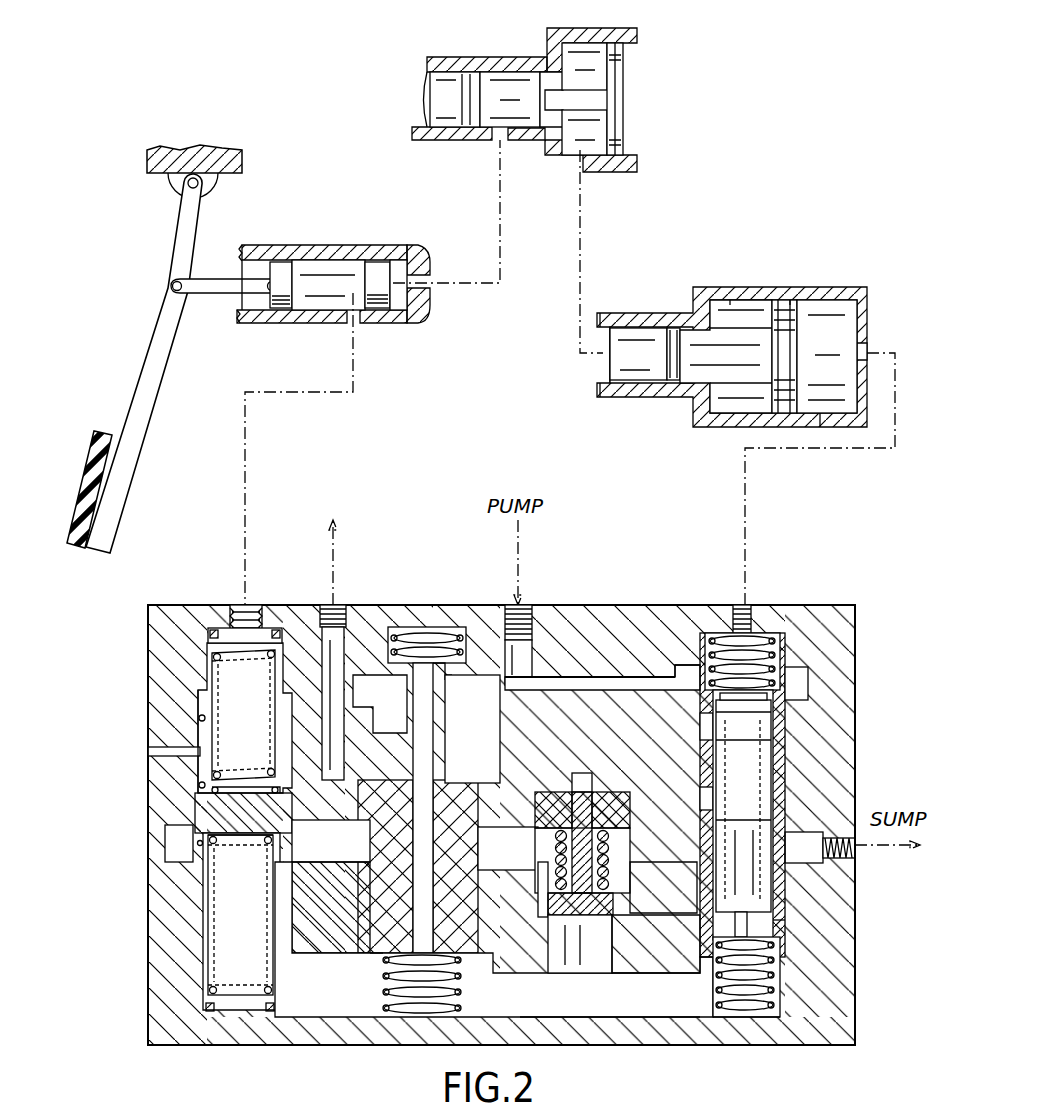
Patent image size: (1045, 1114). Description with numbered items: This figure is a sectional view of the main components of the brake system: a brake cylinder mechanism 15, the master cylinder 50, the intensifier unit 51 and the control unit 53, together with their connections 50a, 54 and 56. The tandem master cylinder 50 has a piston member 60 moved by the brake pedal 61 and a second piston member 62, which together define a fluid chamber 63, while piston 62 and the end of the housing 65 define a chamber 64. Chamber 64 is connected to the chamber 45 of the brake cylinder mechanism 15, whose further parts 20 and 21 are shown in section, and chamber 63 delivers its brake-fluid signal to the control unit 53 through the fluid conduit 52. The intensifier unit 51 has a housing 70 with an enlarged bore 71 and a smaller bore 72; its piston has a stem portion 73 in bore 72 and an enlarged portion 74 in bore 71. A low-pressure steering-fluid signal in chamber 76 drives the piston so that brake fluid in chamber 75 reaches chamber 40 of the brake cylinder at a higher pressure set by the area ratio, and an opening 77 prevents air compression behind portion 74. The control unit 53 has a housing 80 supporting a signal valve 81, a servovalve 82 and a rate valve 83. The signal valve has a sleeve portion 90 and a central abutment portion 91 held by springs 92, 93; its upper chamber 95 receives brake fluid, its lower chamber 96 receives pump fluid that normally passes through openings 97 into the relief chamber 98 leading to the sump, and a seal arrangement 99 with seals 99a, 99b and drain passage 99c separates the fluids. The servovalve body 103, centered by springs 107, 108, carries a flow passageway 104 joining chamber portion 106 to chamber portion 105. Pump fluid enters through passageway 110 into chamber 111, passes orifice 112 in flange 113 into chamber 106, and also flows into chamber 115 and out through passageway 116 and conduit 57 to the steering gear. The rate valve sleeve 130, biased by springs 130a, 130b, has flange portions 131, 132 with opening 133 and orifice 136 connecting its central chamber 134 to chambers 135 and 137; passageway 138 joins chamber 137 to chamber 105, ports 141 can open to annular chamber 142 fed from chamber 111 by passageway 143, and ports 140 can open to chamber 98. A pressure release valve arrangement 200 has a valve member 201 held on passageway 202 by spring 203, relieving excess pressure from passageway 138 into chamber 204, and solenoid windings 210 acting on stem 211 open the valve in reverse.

The brake cylinder mechanism 15 is at (660, 47).
The piston 20 is at (438, 90).
The seal 21 is at (615, 95).
The chamber 40 is at (580, 52).
The chamber 45 is at (515, 75).
The master cylinder 50 is at (278, 258).
The pilot line 50a is at (500, 205).
The intensifier unit 51 is at (805, 300).
The fluid conduit 52 is at (245, 522).
The control unit 53 is at (823, 617).
The pilot line 54 is at (745, 495).
The pump inlet line 56 is at (518, 545).
The fluid conduit 57 is at (333, 572).
The piston member 60 is at (283, 262).
The brake pedal 61 is at (106, 436).
The second piston member 62 is at (380, 258).
The fluid chamber 63 is at (335, 265).
The chamber 64 is at (400, 325).
The housing 65 is at (430, 253).
The housing 70 is at (860, 300).
The enlarged bore 71 is at (825, 412).
The smaller bore 72 is at (630, 395).
The stem portion 73 is at (740, 340).
The enlarged piston portion 74 is at (810, 350).
The chamber 75 is at (645, 330).
The chamber 76 is at (855, 330).
The opening 77 is at (738, 300).
The housing 80 is at (180, 1048).
The signal valve 81 is at (167, 812).
The servovalve 82 is at (380, 960).
The rate valve 83 is at (773, 925).
The sleeve portion 90 is at (203, 890).
The central abutment portion 91 is at (248, 820).
The spring 92 is at (215, 985).
The spring 93 is at (222, 662).
The chamber 95 is at (248, 714).
The fluid chamber 96 is at (248, 926).
The openings 97 is at (198, 855).
The relief chamber 98 is at (810, 857).
The seal arrangement 99 is at (158, 732).
The seal 99a is at (198, 716).
The seal 99b is at (198, 785).
The passage 99c is at (165, 752).
The valve body 103 is at (470, 808).
The flow passageway 104 is at (433, 918).
The chamber portion 105 is at (333, 1007).
The chamber portion 106 is at (398, 628).
The spring 107 is at (455, 628).
The spring 108 is at (462, 1005).
The fluid passageway 110 is at (532, 650).
The fluid chamber 111 is at (470, 699).
The orifice 112 is at (460, 665).
The flange portion 113 is at (460, 680).
The fluid chamber 115 is at (480, 762).
The fluid passageway 116 is at (322, 655).
The sleeve member 130 is at (780, 763).
The spring 130a is at (752, 633).
The spring 130b is at (715, 1015).
The flange portion 131 is at (770, 712).
The flange portion 132 is at (745, 925).
The opening 133 is at (760, 705).
The central chamber 134 is at (756, 784).
The chamber 135 is at (778, 645).
The orifice 136 is at (762, 895).
The chamber 137 is at (775, 990).
The passageway 138 is at (600, 1006).
The ports 140 is at (775, 812).
The ports 141 is at (775, 735).
The annular chamber 142 is at (680, 670).
The fluid conduit passageway 143 is at (615, 688).
The pressure release valve arrangement 200 is at (611, 780).
The valve member 201 is at (558, 905).
The passageway 202 is at (600, 950).
The spring 203 is at (612, 856).
The chamber 204 is at (624, 878).
The solenoid windings 210 is at (630, 808).
The stem 211 is at (595, 838).